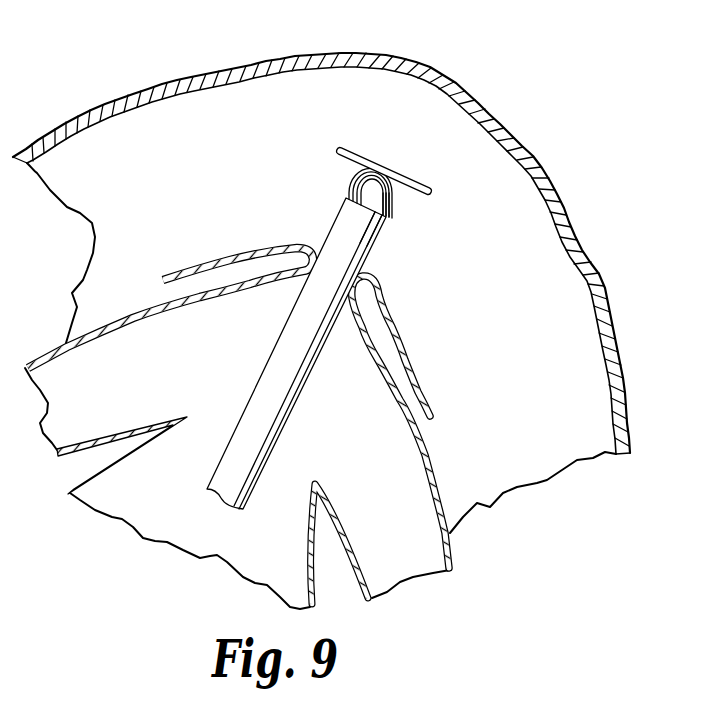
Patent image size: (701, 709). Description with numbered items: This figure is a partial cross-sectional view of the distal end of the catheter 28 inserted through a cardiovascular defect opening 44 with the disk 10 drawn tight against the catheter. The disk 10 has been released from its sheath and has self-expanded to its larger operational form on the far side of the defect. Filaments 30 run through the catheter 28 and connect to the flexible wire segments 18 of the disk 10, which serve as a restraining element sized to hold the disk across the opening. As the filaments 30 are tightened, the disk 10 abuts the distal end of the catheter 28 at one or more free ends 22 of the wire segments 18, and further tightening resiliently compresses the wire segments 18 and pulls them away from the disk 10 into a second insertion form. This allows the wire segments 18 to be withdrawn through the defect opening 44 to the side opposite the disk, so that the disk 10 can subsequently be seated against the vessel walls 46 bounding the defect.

The disk 10 is at (350, 151).
The flexible wire segments 18 is at (398, 194).
The free ends 22 is at (352, 194).
The catheter 28 is at (327, 240).
The filaments 30 is at (383, 213).
The defect opening 44 is at (341, 328).
The vessel walls 46 is at (418, 398).